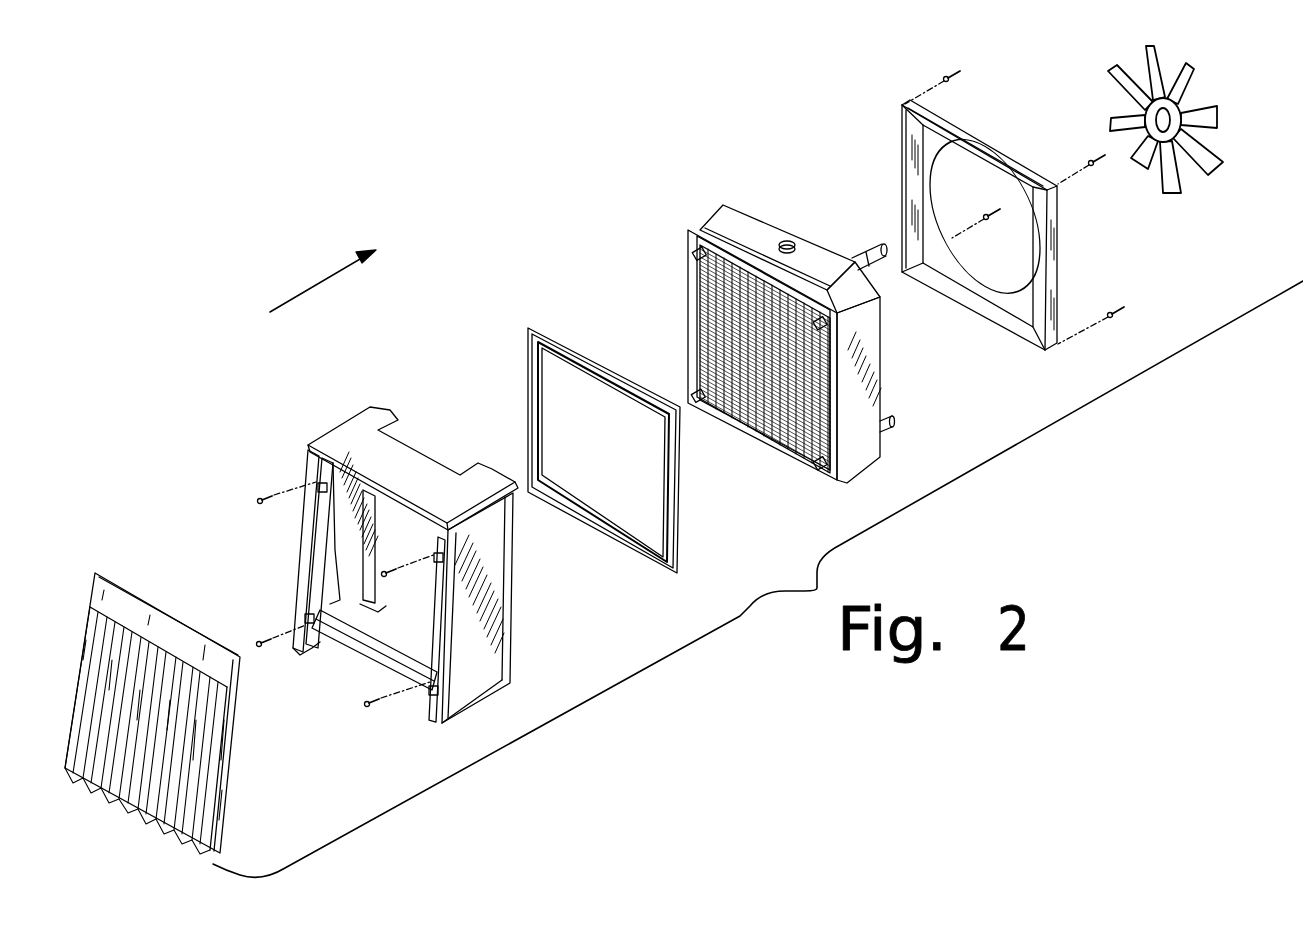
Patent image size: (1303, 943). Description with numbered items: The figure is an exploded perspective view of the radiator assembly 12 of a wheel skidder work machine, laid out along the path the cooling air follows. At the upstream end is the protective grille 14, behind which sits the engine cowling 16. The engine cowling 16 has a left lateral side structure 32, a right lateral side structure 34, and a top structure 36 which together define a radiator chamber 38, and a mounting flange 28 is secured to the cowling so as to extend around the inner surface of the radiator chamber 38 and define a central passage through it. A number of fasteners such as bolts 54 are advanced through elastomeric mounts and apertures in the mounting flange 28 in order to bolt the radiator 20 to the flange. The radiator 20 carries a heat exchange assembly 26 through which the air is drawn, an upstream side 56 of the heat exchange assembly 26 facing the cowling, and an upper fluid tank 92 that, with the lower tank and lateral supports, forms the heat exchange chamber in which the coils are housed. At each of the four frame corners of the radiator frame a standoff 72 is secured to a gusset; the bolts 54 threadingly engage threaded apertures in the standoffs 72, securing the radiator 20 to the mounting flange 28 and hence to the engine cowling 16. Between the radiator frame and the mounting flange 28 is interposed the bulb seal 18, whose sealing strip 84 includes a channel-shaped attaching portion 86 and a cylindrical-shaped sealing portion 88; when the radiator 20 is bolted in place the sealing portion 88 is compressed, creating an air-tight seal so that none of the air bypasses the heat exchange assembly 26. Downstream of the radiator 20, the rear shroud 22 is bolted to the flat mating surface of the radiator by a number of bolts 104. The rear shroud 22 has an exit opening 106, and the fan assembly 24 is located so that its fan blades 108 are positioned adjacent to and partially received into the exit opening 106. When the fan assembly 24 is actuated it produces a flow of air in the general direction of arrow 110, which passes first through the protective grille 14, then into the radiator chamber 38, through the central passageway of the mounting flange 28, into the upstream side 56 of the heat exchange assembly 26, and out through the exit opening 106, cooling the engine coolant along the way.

The radiator assembly 12 is at (480, 105).
The protective grille 14 is at (218, 788).
The engine cowling 16 is at (400, 568).
The bulb seal 18 is at (605, 422).
The radiator 20 is at (789, 352).
The rear shroud 22 is at (1025, 190).
The fan assembly 24 is at (1204, 119).
The heat exchange assembly 26 is at (715, 318).
The mounting flange 28 is at (320, 592).
The left lateral side structure 32 is at (505, 575).
The right lateral side structure 34 is at (330, 570).
The top structure 36 is at (340, 436).
The radiator chamber 38 is at (420, 623).
The bolts 54 is at (266, 496).
The upstream side 56 is at (745, 355).
The standoffs 72 is at (698, 252).
The sealing strip 84 is at (530, 330).
The attaching portion 86 is at (543, 410).
The sealing portion 88 is at (526, 386).
The upper fluid tank 92 is at (762, 212).
The bolts 104 is at (1000, 58).
The exit opening 106 is at (940, 186).
The fan blades 108 is at (1210, 158).
The arrow 110 is at (310, 275).